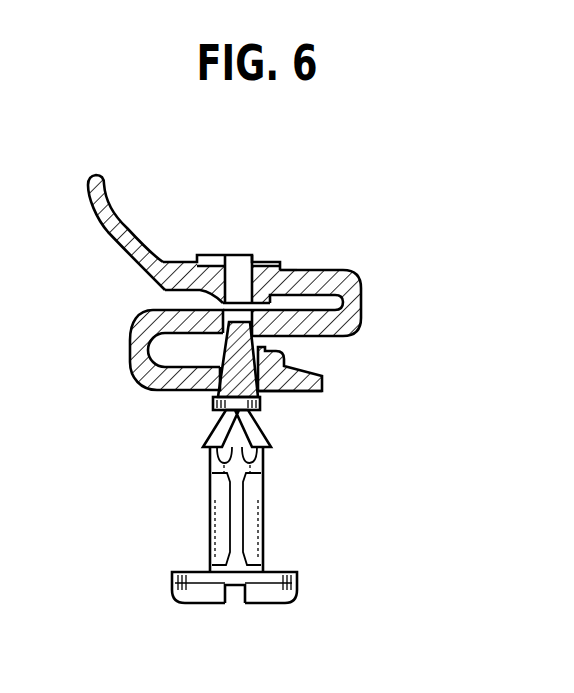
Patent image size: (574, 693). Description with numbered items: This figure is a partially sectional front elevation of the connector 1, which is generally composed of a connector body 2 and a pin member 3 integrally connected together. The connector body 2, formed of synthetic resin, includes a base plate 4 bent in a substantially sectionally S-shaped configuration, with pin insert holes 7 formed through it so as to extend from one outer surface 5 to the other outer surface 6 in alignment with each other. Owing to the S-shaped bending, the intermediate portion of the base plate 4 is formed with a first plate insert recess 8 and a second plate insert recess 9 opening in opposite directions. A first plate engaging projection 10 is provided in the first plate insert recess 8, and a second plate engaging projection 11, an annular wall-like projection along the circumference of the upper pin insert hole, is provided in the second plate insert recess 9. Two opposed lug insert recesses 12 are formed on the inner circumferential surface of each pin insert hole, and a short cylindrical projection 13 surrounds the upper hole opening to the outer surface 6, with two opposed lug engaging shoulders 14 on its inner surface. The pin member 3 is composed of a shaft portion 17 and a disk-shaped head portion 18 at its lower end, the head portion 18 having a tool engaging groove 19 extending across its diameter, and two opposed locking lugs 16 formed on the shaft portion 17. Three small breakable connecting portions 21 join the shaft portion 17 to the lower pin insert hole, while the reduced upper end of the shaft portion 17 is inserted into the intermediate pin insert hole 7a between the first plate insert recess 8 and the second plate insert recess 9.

The connector 1 is at (333, 212).
The connector body 2 is at (373, 296).
The pin member 3 is at (195, 503).
The base plate 4 is at (145, 337).
The outer surface 5 is at (183, 386).
The outer surface 6 is at (338, 269).
The pin insert holes 7 is at (194, 275).
The intermediate pin insert hole 7a is at (205, 296).
The first plate insert recess 8 is at (155, 356).
The second plate insert recess 9 is at (350, 335).
The first plate engaging projection 10 is at (282, 358).
The second plate engaging projection 11 is at (292, 263).
The lug insert recesses 12 is at (239, 262).
The short cylindrical projection 13 is at (200, 258).
The lug engaging shoulders 14 is at (208, 257).
The locking lugs 16 is at (200, 440).
The shaft portion 17 is at (264, 494).
The head portion 18 is at (298, 587).
The tool engaging groove 19 is at (241, 601).
The breakable connecting portions 21 is at (270, 391).